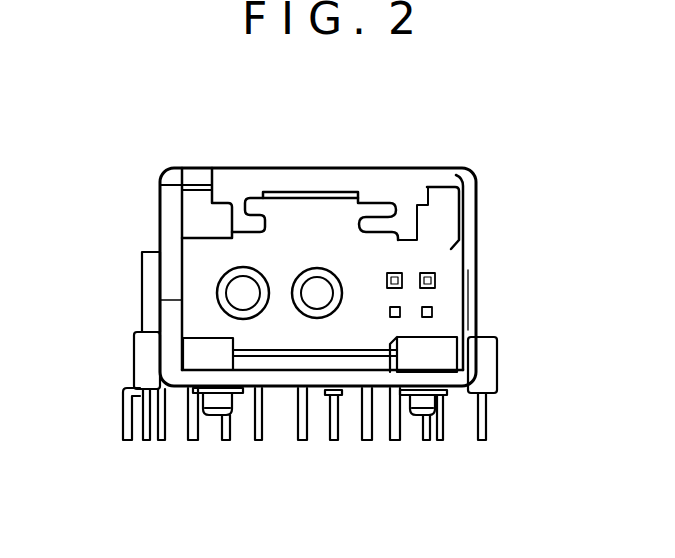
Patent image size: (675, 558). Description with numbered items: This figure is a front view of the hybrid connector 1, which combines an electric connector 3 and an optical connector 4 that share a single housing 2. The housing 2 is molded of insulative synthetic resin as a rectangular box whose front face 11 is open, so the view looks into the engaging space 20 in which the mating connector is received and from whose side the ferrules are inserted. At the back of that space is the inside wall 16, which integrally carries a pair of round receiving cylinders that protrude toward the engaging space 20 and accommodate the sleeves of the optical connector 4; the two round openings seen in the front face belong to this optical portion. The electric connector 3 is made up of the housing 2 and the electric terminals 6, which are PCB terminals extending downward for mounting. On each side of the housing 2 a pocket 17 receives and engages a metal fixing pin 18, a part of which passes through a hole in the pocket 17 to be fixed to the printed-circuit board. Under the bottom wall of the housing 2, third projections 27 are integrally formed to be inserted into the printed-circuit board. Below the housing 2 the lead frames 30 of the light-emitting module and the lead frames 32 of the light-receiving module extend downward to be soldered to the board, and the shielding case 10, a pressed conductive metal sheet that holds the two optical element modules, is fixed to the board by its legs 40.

The hybrid connector 1 is at (437, 146).
The housing 2 is at (455, 168).
The electric connector 3 is at (442, 302).
The optical connector 4 is at (206, 268).
The electric terminals 6 is at (393, 442).
The shielding case 10 is at (148, 284).
The front face 11 is at (470, 312).
The inside wall 16 is at (332, 222).
The pocket 17 is at (138, 352).
The fixing pin 18 is at (147, 442).
The engaging space 20 is at (170, 320).
The third projections 27 is at (211, 427).
The lead frames 30 is at (345, 442).
The lead frames 32 is at (251, 442).
The leg 40 is at (120, 415).